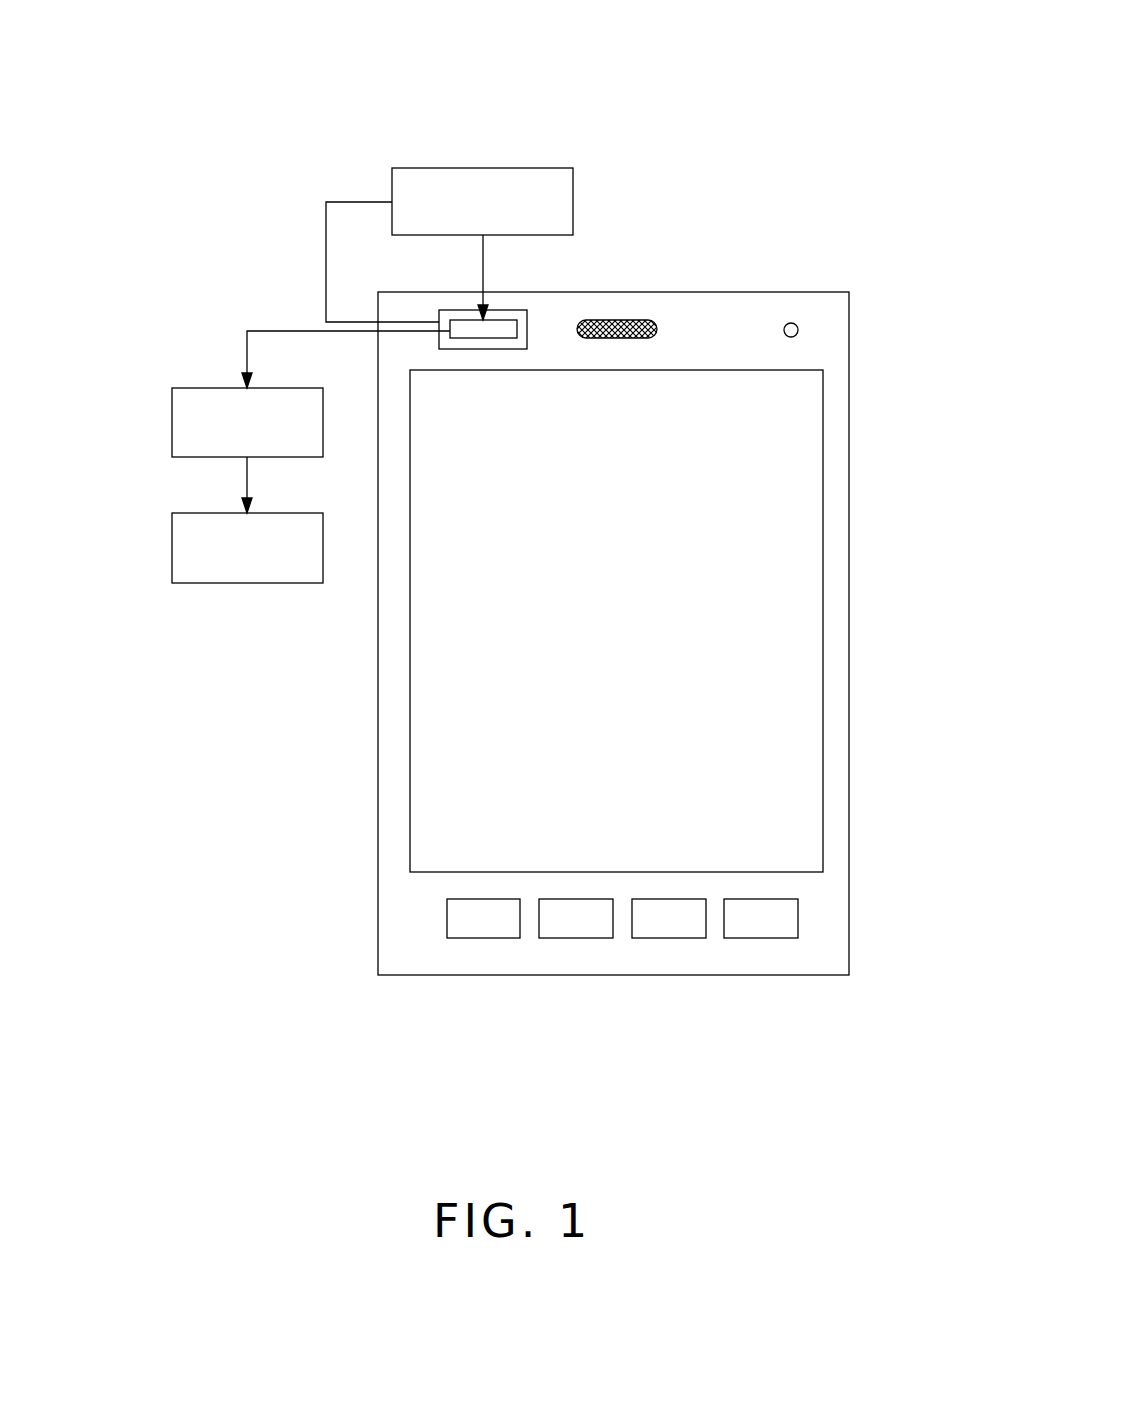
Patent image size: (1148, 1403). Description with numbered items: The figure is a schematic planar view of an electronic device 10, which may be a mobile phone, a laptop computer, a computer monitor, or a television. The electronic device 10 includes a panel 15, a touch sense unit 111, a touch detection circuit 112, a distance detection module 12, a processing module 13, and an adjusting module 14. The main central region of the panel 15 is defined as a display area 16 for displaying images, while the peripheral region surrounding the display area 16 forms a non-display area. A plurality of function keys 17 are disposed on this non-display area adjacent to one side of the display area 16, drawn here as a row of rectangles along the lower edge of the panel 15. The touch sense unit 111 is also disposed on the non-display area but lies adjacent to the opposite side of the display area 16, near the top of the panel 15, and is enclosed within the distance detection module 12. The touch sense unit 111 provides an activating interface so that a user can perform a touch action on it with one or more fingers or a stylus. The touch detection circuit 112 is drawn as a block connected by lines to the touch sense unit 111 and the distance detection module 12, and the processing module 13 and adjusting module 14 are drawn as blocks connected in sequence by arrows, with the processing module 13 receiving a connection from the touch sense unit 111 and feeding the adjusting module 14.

The electronic device 10 is at (723, 88).
The touch sense unit 111 is at (528, 328).
The distance detection module 12 is at (502, 317).
The touch detection circuit 112 is at (574, 201).
The processing module 13 is at (172, 418).
The adjusting module 14 is at (172, 548).
The panel 15 is at (850, 548).
The display area 16 is at (823, 488).
The function keys 17 is at (798, 918).